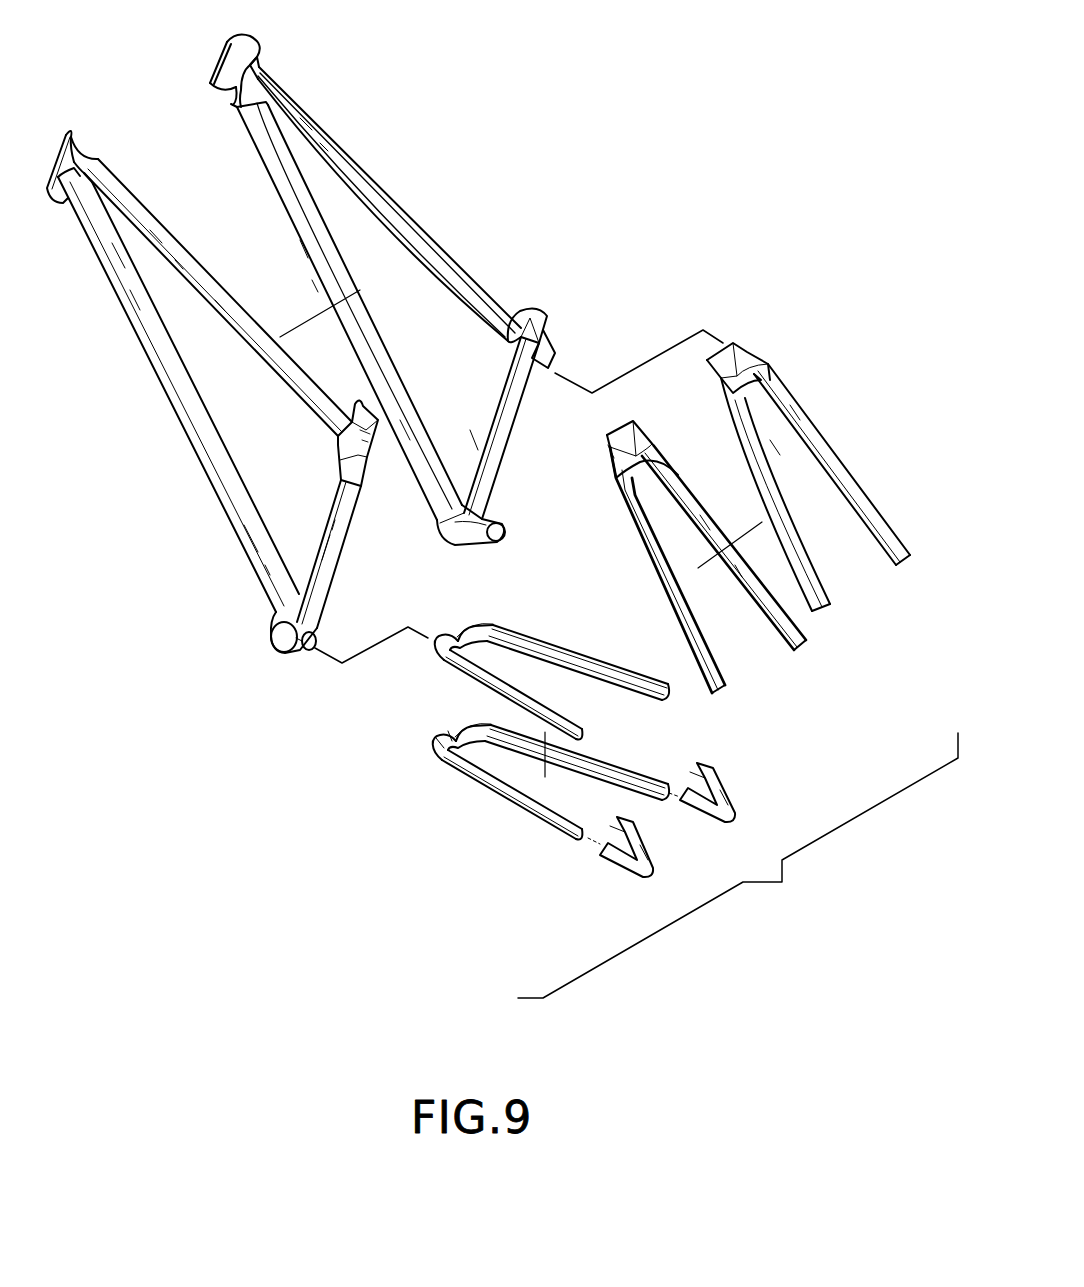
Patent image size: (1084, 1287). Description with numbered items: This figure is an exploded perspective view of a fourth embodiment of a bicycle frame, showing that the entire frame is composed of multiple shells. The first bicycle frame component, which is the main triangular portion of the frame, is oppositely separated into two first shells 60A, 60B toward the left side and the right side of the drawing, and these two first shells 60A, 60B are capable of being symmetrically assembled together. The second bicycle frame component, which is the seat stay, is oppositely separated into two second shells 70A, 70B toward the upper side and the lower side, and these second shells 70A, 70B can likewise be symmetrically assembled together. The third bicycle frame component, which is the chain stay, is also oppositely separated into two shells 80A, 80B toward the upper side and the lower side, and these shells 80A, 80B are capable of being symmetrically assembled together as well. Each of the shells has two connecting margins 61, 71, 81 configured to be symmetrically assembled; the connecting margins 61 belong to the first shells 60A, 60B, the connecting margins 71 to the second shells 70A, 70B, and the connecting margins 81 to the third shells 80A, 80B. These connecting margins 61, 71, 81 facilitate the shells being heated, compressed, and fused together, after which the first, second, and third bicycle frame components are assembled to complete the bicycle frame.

The first shell 60A is at (383, 160).
The first shell 60B is at (157, 418).
The connecting margin 61 is at (437, 257).
The second shell 70A is at (810, 383).
The second shell 70B is at (635, 555).
The connecting margin 71 is at (715, 390).
The third shell 80A is at (428, 670).
The third shell 80B is at (527, 833).
The connecting margin 81 is at (467, 682).